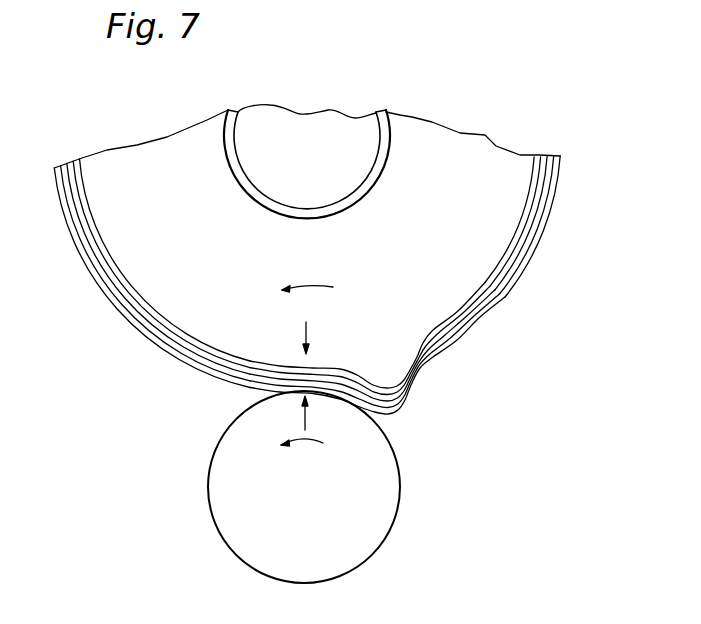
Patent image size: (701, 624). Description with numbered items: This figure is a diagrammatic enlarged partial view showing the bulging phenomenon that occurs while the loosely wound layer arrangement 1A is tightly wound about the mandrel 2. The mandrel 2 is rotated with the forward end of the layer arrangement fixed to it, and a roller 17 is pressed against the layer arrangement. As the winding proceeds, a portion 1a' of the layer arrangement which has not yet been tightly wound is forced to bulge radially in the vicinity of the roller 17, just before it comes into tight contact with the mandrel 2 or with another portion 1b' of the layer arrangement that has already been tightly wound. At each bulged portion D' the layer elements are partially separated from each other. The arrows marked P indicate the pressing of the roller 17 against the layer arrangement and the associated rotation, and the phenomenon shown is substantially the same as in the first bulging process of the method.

The loosely wound layer arrangement 1A is at (167, 348).
The portion of the layer arrangement not yet tightly wound 1a' is at (317, 272).
The portion of the layer arrangement tightly wound 1b' is at (347, 259).
The mandrel 2 is at (372, 190).
The bulged portion D' is at (377, 354).
The roller 17 is at (400, 498).
The pressing force P is at (307, 366).